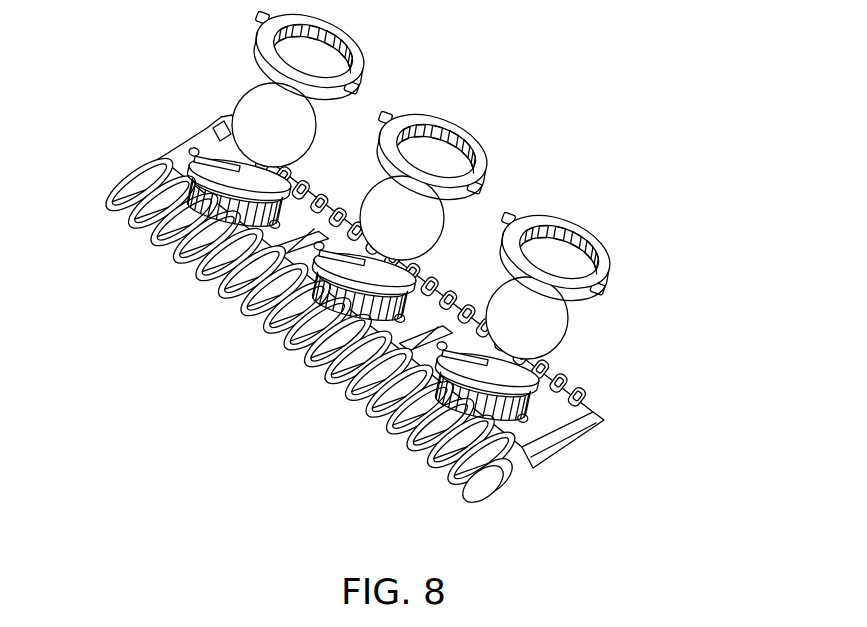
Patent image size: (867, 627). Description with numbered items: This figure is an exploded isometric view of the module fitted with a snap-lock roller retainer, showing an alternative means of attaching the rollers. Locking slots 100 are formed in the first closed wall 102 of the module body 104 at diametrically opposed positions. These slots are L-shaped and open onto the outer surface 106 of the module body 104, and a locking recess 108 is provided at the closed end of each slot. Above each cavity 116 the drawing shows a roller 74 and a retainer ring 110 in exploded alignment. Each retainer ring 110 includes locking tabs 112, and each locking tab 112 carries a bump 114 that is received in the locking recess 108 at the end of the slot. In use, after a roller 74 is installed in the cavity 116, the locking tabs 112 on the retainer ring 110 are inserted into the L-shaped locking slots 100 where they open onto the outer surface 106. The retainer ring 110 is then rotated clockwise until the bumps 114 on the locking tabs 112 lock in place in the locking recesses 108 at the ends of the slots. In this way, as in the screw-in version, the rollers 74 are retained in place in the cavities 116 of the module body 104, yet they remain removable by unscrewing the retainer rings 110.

The roller 74 is at (568, 321).
The locking slots 100 is at (220, 163).
The first closed wall 102 is at (285, 190).
The module body 104 is at (168, 153).
The outer surface 106 is at (553, 413).
The locking recess 108 is at (243, 168).
The retainer rings 110 is at (598, 232).
The locking tabs 112 is at (608, 288).
The bump 114 is at (400, 117).
The cavity 116 is at (382, 282).